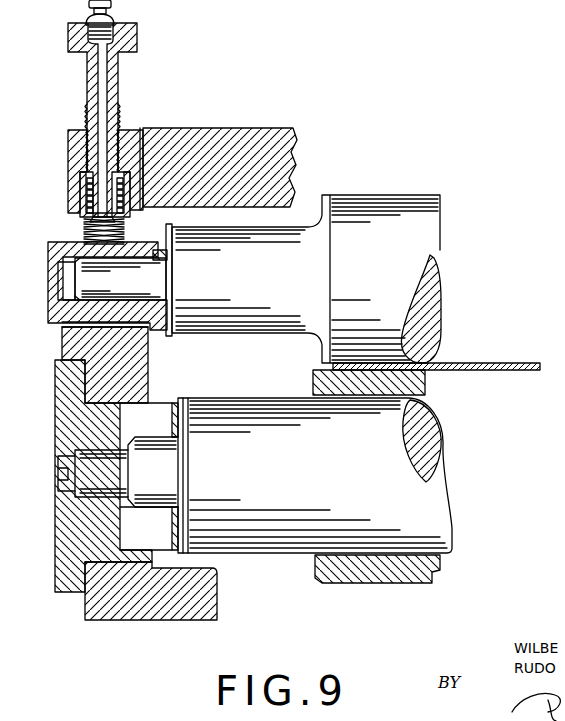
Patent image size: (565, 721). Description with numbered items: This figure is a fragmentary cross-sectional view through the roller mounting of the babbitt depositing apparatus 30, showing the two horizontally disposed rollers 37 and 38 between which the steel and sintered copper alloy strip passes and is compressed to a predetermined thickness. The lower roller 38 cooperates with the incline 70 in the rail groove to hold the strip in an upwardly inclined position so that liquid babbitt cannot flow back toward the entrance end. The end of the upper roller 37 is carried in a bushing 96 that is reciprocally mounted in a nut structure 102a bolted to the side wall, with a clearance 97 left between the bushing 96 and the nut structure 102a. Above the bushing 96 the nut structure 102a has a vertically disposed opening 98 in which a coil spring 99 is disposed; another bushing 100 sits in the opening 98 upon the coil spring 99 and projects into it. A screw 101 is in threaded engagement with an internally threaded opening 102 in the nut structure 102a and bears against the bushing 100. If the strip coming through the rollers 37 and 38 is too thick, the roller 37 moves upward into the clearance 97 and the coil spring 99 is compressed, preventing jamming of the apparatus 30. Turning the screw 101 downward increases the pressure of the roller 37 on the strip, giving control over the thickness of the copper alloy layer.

The babbitt depositing apparatus 30 is at (80, 123).
The screw 101 is at (110, 69).
The internally threaded opening 102 is at (101, 153).
The nut structure 102a is at (132, 128).
The bushing 100 is at (82, 184).
The vertically disposed opening 98 is at (82, 220).
The coil spring 99 is at (128, 230).
The clearance 97 is at (76, 244).
The bushing 96 is at (60, 255).
The roller 37 is at (422, 245).
The roller 38 is at (295, 543).
The incline 70 is at (483, 372).